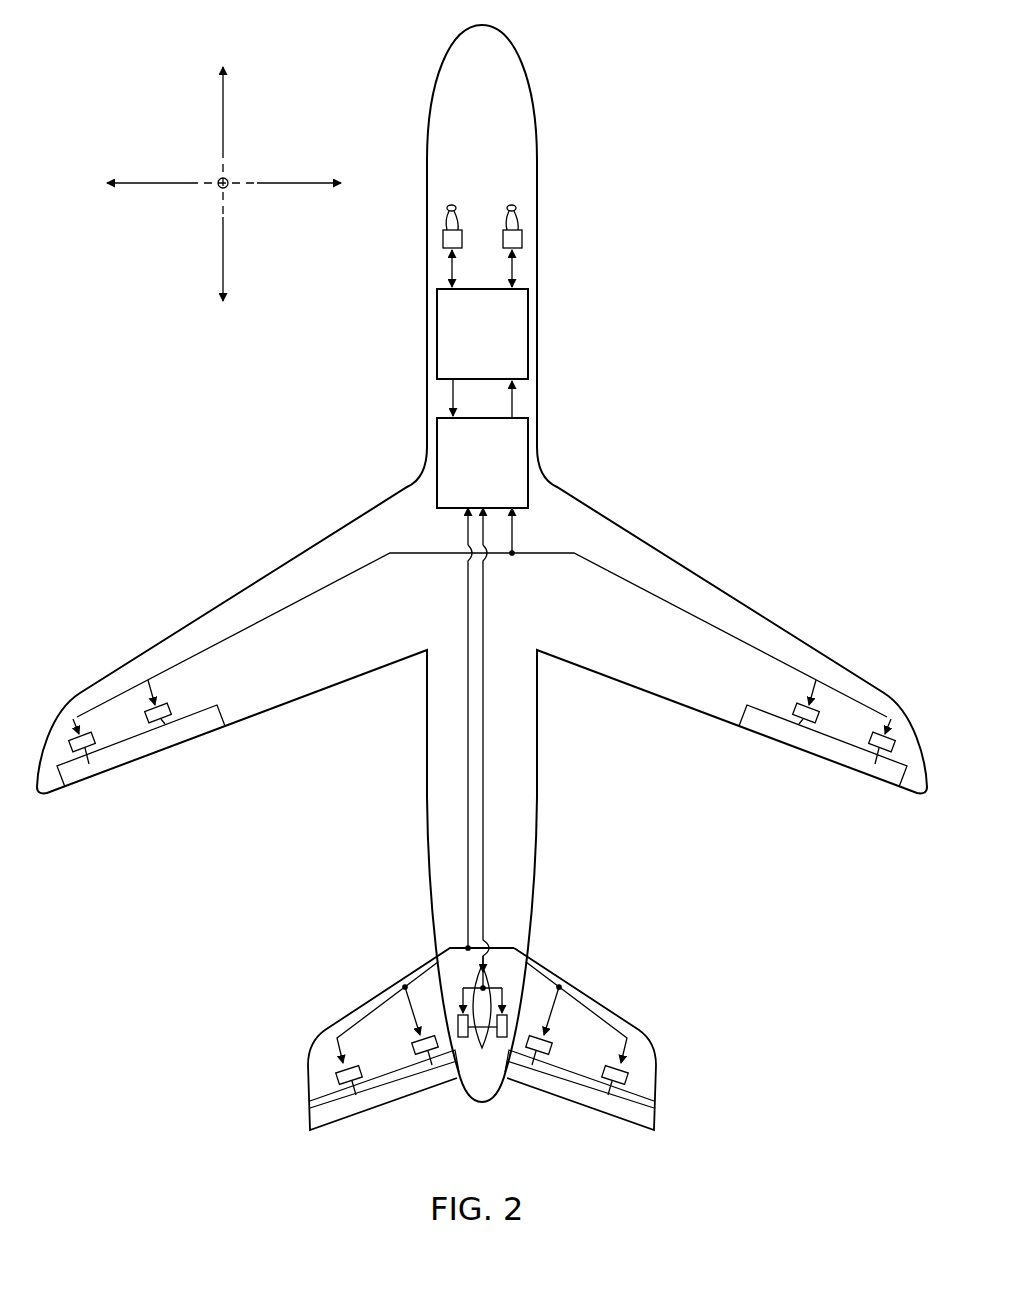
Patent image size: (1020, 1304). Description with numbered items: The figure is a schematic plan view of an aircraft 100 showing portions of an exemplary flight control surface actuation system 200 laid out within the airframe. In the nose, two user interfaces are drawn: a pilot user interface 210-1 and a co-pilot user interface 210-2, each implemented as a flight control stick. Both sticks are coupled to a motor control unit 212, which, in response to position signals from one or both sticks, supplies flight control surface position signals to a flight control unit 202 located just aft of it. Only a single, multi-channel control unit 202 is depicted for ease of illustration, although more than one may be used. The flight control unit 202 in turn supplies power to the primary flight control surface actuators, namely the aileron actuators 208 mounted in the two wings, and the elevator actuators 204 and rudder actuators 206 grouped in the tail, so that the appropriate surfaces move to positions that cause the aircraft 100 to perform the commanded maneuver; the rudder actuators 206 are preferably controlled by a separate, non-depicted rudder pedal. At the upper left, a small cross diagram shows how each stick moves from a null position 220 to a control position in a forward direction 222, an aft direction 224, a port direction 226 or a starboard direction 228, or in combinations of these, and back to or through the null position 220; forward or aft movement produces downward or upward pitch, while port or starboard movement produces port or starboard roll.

The aircraft 100 is at (513, 48).
The flight control surface actuation system 200 is at (481, 190).
The flight control unit 202 is at (520, 485).
The elevator actuators 204 is at (421, 1052).
The rudder actuators 206 is at (463, 1037).
The aileron actuators 208 is at (165, 711).
The pilot user interface 210-1 is at (443, 240).
The co-pilot user interface 210-2 is at (522, 238).
The motor control unit 212 is at (528, 330).
The null position 220 is at (217, 187).
The forward direction 222 is at (223, 110).
The aft direction 224 is at (223, 252).
The port direction 226 is at (152, 183).
The starboard direction 228 is at (293, 185).